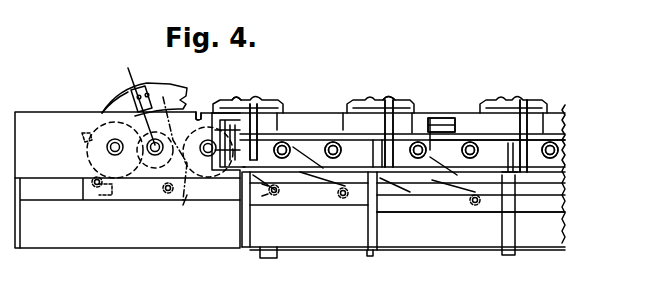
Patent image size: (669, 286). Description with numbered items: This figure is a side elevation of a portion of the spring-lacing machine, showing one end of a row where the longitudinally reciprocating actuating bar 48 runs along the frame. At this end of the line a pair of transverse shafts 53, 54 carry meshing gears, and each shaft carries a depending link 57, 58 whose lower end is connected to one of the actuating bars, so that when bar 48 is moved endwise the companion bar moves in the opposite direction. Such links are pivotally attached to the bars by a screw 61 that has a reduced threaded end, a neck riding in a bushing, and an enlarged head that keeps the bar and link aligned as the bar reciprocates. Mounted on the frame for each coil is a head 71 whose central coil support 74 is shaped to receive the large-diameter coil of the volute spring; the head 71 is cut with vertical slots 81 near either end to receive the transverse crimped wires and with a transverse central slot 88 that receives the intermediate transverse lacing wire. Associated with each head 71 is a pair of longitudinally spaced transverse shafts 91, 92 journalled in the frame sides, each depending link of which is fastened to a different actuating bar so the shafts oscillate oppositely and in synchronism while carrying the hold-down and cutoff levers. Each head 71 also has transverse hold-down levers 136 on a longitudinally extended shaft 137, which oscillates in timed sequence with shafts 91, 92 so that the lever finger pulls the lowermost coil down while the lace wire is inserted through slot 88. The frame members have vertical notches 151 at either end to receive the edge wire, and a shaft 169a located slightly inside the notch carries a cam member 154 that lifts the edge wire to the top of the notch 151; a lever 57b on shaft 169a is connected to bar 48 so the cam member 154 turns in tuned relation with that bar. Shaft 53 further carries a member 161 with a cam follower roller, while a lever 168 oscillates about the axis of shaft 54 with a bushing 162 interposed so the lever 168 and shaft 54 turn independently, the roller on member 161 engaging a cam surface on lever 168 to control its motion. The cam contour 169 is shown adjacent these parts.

The actuating bar 48 is at (466, 210).
The transverse shaft 53 is at (108, 150).
The transverse shaft 54 is at (155, 152).
The depending link 57 is at (172, 194).
The lever 57b is at (260, 186).
The depending link 58 is at (96, 190).
The screw 61 is at (117, 190).
The head 71 is at (265, 90).
The central coil support 74 is at (400, 108).
The vertical slot 81 is at (279, 122).
The transverse central slot 88 is at (245, 117).
The transverse shaft 91 is at (332, 156).
The transverse shaft 92 is at (285, 144).
The transverse hold-down lever 136 is at (523, 133).
The longitudinally extended shaft 137 is at (438, 143).
The vertical notch 151 is at (198, 116).
The cam member 154 is at (187, 205).
The member 161 is at (82, 136).
The bushing 162 is at (133, 99).
The lever 168 is at (120, 100).
The cam 169 is at (170, 88).
The shaft 169a is at (195, 161).